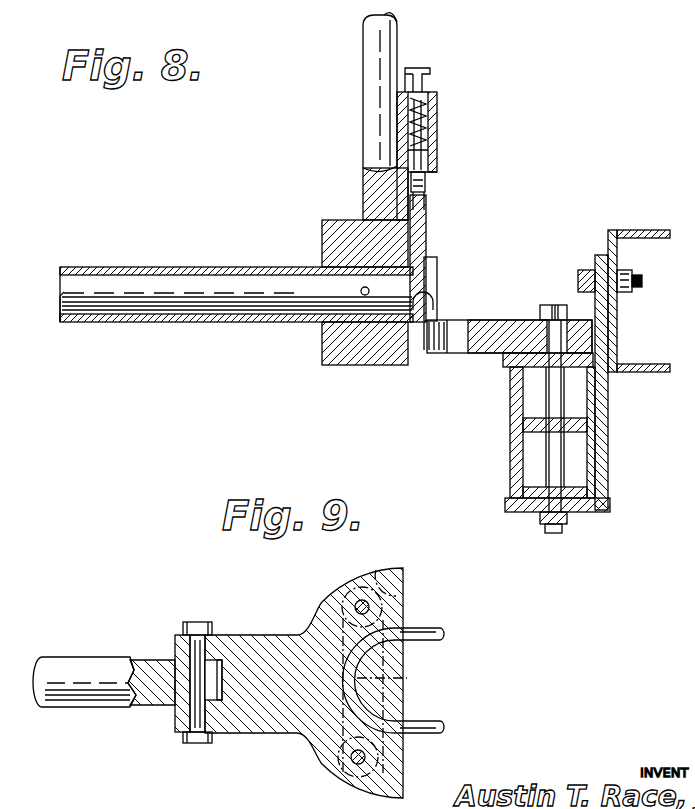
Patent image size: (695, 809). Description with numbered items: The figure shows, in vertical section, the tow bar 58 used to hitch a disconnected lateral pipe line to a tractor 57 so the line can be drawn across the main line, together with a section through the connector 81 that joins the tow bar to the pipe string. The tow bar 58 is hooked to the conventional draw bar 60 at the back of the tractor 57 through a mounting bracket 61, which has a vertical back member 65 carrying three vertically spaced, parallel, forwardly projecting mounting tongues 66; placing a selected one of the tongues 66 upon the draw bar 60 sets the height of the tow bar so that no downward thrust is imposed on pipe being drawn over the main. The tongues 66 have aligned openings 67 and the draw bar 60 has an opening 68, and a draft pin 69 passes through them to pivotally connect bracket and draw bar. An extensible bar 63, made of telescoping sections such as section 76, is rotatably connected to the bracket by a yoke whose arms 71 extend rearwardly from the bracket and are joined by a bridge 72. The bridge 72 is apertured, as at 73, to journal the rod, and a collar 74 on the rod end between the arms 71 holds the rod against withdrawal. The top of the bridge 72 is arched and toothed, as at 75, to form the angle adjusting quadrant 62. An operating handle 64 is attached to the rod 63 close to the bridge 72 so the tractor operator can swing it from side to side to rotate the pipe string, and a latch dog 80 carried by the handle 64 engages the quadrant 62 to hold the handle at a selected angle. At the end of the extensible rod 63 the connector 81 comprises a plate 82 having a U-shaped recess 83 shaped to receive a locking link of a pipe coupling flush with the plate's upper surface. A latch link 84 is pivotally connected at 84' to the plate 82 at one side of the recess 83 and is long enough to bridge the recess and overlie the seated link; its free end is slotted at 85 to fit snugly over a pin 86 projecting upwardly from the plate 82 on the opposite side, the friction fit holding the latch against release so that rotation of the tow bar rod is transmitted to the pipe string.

In FIG. 8, the tractor 57 is at (638, 373).
In FIG. 8, the tow bar 58 is at (262, 267).
In FIG. 9, the tow bar 58 is at (92, 655).
In FIG. 8, the draw bar 60 is at (609, 465).
In FIG. 8, the mounting bracket 61 is at (508, 470).
In FIG. 8, the angle adjusting quadrant 62 is at (426, 205).
In FIG. 8, the extensible bar 63 is at (125, 293).
In FIG. 9, the extensible bar 63 is at (76, 698).
In FIG. 8, the operating handle 64 is at (396, 46).
In FIG. 8, the vertical back member 65 is at (510, 403).
In FIG. 8, the mounting tongues 66 is at (508, 372).
In FIG. 8, the aligned openings 67 is at (575, 418).
In FIG. 8, the opening 68 is at (580, 512).
In FIG. 8, the draft pin 69 is at (548, 384).
In FIG. 8, the arms 71 is at (455, 322).
In FIG. 8, the bridge 72 is at (420, 240).
In FIG. 8, the aperture 73 is at (433, 297).
In FIG. 8, the collar 74 is at (437, 282).
In FIG. 8, the arched toothed top 75 is at (428, 185).
In FIG. 8, the telescoping section 76 is at (200, 322).
In FIG. 8, the latch dog 80 is at (437, 165).
In FIG. 9, the connector 81 is at (245, 633).
In FIG. 9, the plate 82 is at (273, 724).
In FIG. 9, the recess 83 is at (403, 681).
In FIG. 9, the latch link 84 is at (348, 702).
In FIG. 9, the pivot connection 84' is at (397, 756).
In FIG. 9, the slot 85 is at (396, 572).
In FIG. 9, the pin 86 is at (354, 603).